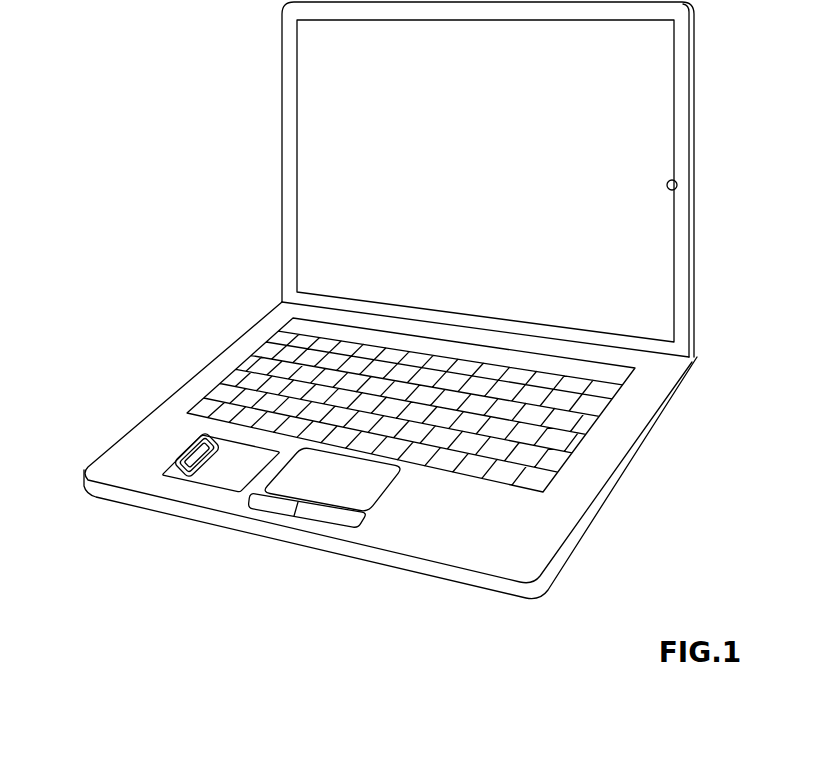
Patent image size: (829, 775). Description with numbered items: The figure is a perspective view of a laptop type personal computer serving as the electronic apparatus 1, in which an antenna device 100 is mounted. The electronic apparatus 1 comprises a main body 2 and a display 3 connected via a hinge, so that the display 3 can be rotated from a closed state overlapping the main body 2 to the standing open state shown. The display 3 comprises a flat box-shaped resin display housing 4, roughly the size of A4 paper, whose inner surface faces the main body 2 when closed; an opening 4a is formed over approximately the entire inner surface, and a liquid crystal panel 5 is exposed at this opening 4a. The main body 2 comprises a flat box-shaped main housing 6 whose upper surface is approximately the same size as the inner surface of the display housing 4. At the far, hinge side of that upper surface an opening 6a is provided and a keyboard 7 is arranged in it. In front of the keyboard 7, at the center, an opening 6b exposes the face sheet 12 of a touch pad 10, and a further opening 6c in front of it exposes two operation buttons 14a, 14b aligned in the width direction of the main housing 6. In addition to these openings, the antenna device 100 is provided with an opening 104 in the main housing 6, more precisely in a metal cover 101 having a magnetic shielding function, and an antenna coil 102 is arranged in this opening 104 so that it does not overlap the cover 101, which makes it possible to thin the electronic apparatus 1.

The electronic apparatus 1 is at (157, 60).
The main body 2 is at (153, 402).
The display 3 is at (280, 137).
The display housing 4 is at (683, 142).
The opening 4a is at (676, 192).
The liquid crystal panel 5 is at (648, 260).
The main housing 6 is at (553, 537).
The cover 101 is at (390, 478).
The opening 6a is at (567, 448).
The opening 6b is at (388, 488).
The opening 6c is at (298, 510).
The keyboard 7 is at (577, 430).
The touch pad 10 is at (322, 492).
The face sheet 12 is at (350, 493).
The operation button 14a is at (273, 497).
The operation button 14b is at (327, 515).
The antenna device 100 is at (168, 479).
The antenna coil 102 is at (198, 450).
The opening 104 is at (223, 475).